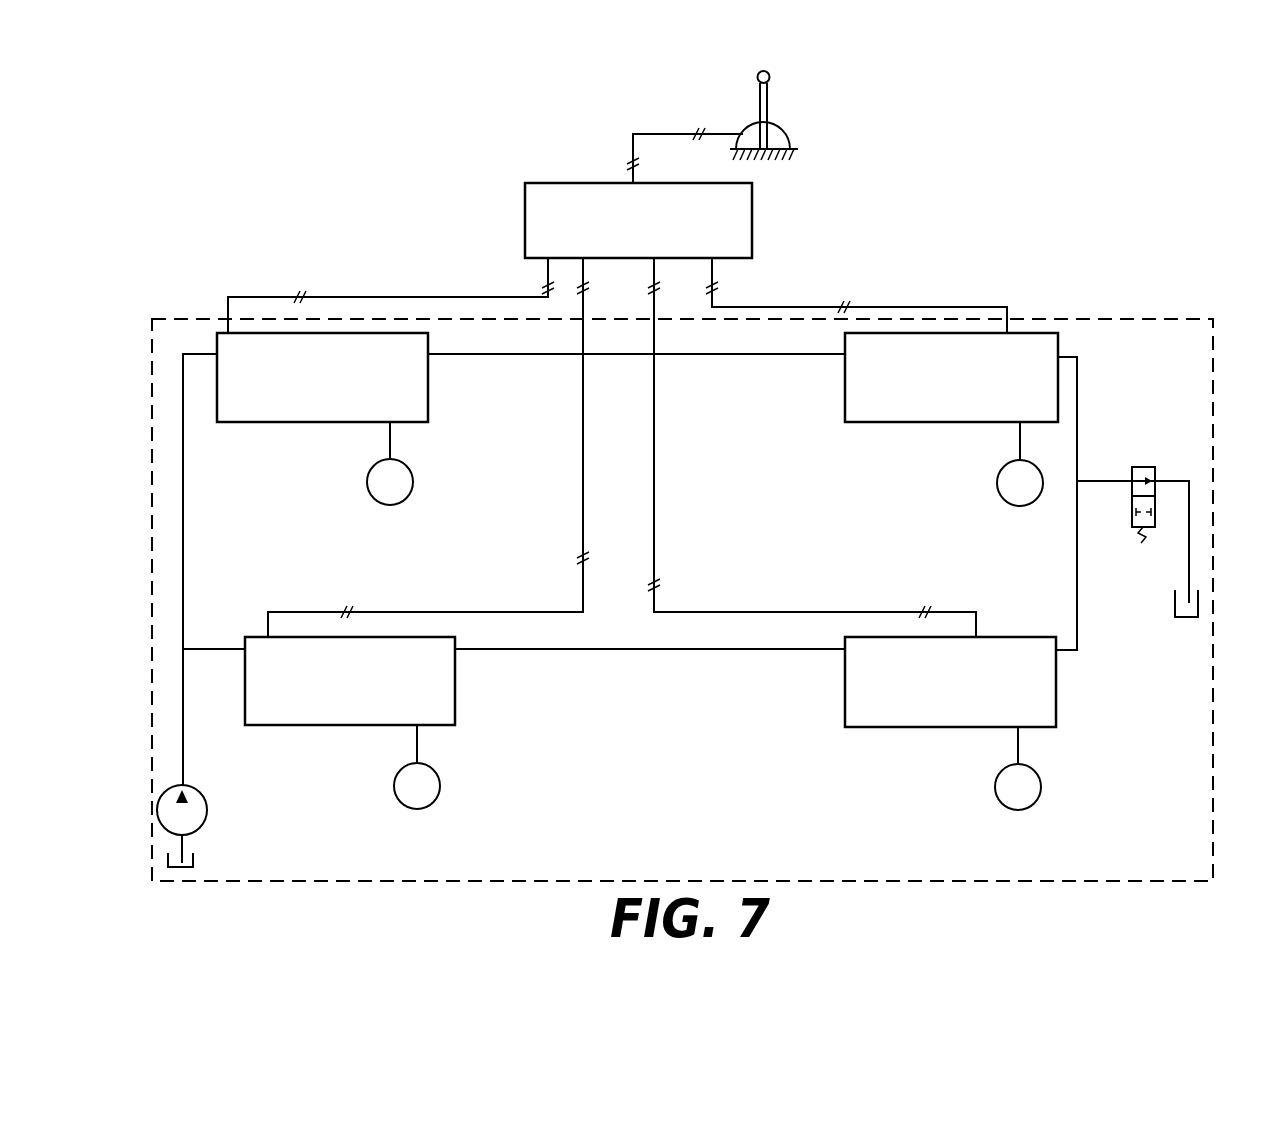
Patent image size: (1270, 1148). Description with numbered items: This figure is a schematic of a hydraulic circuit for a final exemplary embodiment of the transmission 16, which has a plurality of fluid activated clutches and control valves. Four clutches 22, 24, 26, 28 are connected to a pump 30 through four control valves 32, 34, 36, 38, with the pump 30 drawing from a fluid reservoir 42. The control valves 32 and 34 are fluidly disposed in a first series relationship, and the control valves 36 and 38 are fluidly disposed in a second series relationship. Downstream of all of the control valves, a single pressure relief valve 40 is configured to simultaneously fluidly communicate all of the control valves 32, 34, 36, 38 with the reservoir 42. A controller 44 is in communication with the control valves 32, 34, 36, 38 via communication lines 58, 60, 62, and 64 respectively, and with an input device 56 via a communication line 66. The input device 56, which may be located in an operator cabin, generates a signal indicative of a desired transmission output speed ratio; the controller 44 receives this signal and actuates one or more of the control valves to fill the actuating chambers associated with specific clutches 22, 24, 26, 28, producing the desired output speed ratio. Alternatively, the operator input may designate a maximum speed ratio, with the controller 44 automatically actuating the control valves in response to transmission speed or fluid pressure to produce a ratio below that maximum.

The transmission 16 is at (1213, 816).
The clutch 22 is at (413, 480).
The clutch 24 is at (997, 484).
The clutch 26 is at (440, 785).
The clutch 28 is at (995, 787).
The pump 30 is at (207, 810).
The control valve 32 is at (322, 377).
The control valve 34 is at (951, 377).
The control valve 36 is at (350, 681).
The control valve 38 is at (950, 682).
The pressure relief valve 40 is at (1140, 467).
The fluid reservoir 42 is at (193, 862).
The controller 44 is at (752, 222).
The input device 56 is at (769, 80).
The communication line 58 is at (402, 297).
The communication line 60 is at (788, 307).
The communication line 62 is at (583, 519).
The communication line 64 is at (654, 482).
The communication line 66 is at (667, 134).